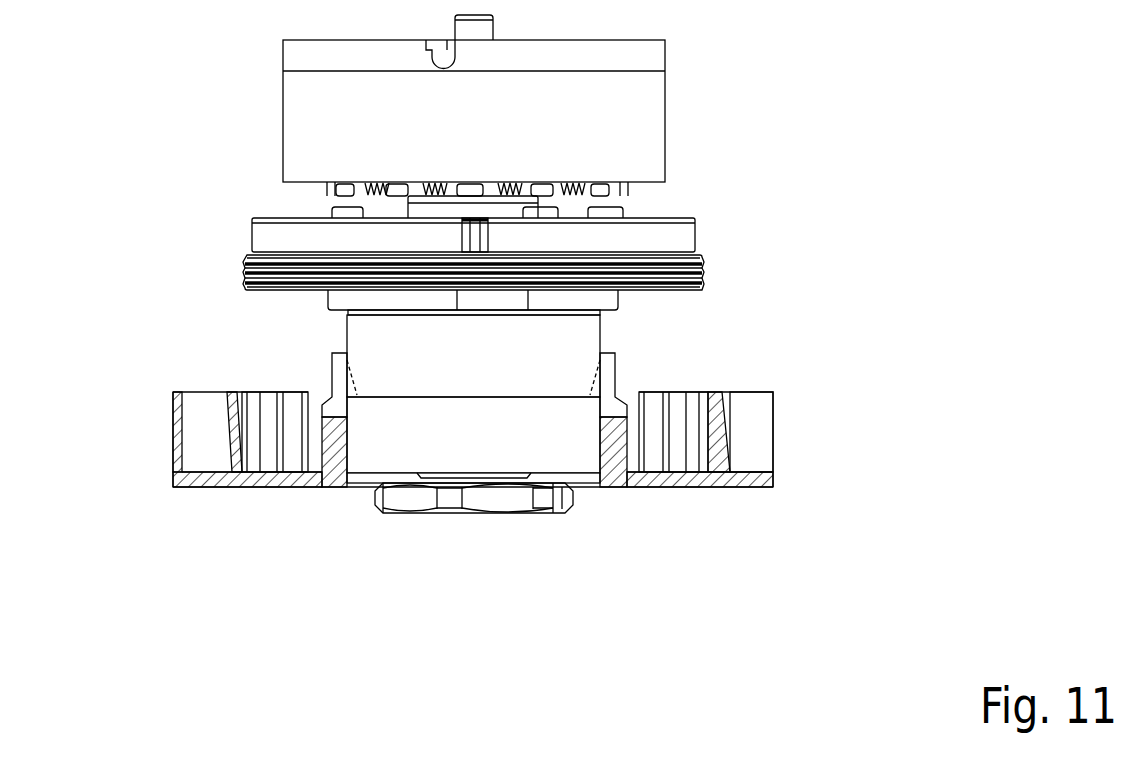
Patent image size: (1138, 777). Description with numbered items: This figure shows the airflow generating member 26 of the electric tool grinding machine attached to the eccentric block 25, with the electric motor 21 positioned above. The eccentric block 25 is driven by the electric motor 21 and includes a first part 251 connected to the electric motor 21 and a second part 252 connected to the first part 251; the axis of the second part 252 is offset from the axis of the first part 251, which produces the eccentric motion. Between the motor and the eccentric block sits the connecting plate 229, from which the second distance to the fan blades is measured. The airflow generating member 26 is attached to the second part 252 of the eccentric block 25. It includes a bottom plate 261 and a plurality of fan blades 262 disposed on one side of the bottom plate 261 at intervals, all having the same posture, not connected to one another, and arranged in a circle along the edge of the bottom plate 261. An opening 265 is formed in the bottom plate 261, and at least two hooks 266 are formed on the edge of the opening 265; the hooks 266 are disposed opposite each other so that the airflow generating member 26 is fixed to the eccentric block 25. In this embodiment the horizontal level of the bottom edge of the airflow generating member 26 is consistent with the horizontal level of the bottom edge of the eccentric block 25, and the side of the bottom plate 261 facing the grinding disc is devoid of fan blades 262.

The electric motor 21 is at (665, 118).
The connecting plate 229 is at (706, 266).
The eccentric block 25 is at (345, 321).
The first part 251 is at (582, 334).
The second part 252 is at (490, 455).
The airflow generating member 26 is at (173, 418).
The bottom plate 261 is at (272, 488).
The fan blades 262 is at (775, 418).
The opening 265 is at (597, 481).
The hooks 266 is at (341, 378).